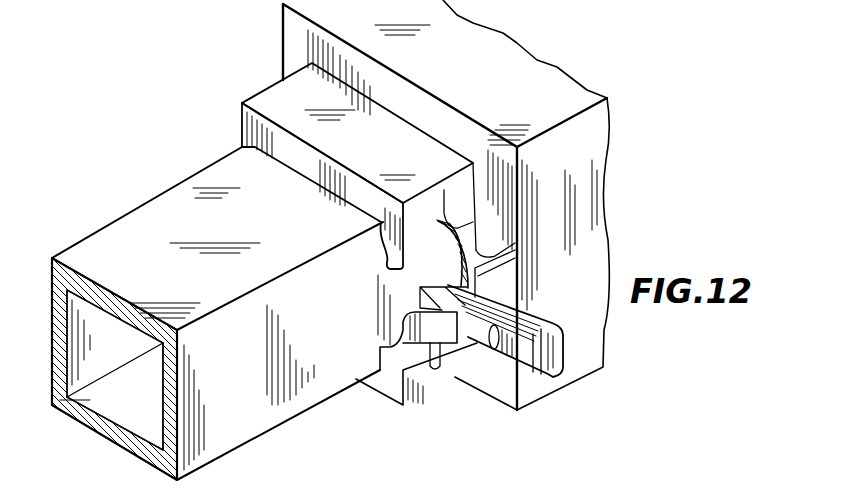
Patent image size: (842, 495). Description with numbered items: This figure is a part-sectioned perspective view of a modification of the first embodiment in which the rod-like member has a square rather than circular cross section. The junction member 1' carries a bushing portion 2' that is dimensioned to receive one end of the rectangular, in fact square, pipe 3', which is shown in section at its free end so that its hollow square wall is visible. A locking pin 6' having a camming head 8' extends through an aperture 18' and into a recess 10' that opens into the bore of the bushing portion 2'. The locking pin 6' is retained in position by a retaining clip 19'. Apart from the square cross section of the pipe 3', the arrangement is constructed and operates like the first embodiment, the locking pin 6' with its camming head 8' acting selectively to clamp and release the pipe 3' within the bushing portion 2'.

The junction member 1' is at (468, 205).
The bushing portion 2' is at (352, 163).
The rectangular (square) pipe 3' is at (220, 314).
The locking pin 6' is at (506, 355).
The camming head 8' is at (431, 265).
The recess 10' is at (518, 222).
The aperture 18' is at (493, 322).
The retaining clip 19' is at (416, 369).